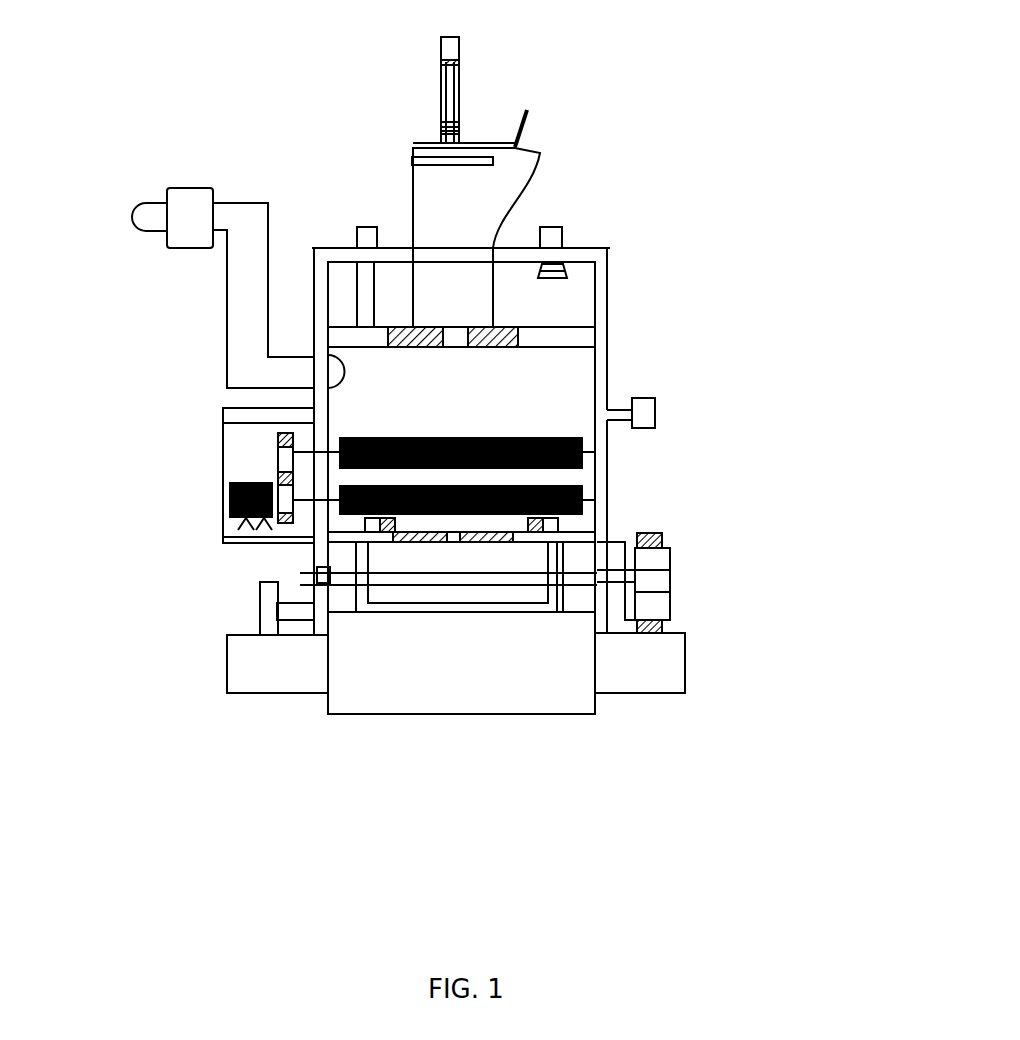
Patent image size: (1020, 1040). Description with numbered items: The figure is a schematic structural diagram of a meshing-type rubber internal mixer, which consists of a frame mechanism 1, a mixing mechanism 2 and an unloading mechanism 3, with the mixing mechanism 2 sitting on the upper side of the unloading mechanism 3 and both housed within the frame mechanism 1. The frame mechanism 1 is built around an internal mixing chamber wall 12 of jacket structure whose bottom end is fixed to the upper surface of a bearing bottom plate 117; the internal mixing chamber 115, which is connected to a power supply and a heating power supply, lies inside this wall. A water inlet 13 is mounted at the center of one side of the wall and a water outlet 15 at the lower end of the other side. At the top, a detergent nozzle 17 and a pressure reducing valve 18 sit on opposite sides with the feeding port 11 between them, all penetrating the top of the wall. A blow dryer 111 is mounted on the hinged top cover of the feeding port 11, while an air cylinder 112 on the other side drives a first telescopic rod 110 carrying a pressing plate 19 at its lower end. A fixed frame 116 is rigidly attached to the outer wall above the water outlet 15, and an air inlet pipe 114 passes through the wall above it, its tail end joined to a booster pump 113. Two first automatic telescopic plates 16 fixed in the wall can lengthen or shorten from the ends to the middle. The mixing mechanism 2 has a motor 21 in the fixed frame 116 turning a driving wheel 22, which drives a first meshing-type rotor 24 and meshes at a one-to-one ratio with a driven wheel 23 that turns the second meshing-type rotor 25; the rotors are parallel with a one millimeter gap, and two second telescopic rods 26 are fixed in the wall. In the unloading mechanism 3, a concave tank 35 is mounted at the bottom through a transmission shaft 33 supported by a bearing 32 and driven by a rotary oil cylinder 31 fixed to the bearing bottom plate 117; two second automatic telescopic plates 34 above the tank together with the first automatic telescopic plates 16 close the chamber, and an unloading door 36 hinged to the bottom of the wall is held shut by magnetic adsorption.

The frame mechanism 1 is at (483, 741).
The mixing mechanism 2 is at (627, 478).
The unloading mechanism 3 is at (697, 593).
The feeding port 11 is at (487, 205).
The internal mixing chamber wall 12 is at (594, 328).
The water inlet 13 is at (655, 410).
The water outlet 15 is at (270, 595).
The first automatic telescopic plate 16 is at (582, 338).
The detergent nozzle 17 is at (551, 237).
The pressure reducing valve 18 is at (367, 237).
The pressing plate 19 is at (422, 158).
The motor 21 is at (280, 498).
The driving wheel 22 is at (243, 518).
The driven wheel 23 is at (287, 448).
The first meshing-type rotor 24 is at (578, 498).
The second meshing-type rotor 25 is at (545, 440).
The second telescopic rod 26 is at (573, 527).
The rotary oil cylinder 31 is at (660, 560).
The bearing 32 is at (318, 577).
The transmission shaft 33 is at (340, 580).
The second automatic telescopic plate 34 is at (458, 542).
The concave tank 35 is at (557, 587).
The unloading door 36 is at (423, 668).
The first telescopic rod 110 is at (460, 125).
The blow dryer 111 is at (520, 133).
The air cylinder 112 is at (448, 88).
The booster pump 113 is at (190, 213).
The air inlet pipe 114 is at (250, 278).
The internal mixing chamber 115 is at (410, 390).
The fixed frame 116 is at (238, 452).
The bearing bottom plate 117 is at (678, 657).